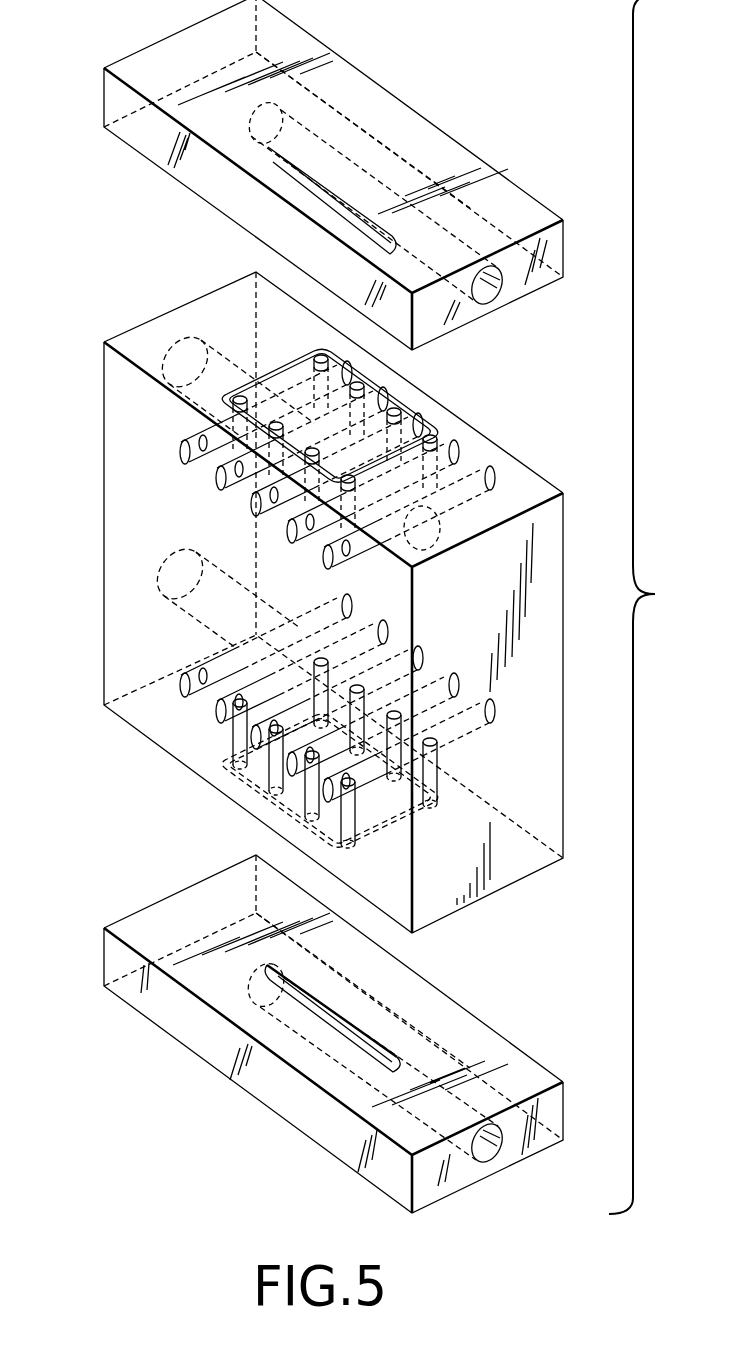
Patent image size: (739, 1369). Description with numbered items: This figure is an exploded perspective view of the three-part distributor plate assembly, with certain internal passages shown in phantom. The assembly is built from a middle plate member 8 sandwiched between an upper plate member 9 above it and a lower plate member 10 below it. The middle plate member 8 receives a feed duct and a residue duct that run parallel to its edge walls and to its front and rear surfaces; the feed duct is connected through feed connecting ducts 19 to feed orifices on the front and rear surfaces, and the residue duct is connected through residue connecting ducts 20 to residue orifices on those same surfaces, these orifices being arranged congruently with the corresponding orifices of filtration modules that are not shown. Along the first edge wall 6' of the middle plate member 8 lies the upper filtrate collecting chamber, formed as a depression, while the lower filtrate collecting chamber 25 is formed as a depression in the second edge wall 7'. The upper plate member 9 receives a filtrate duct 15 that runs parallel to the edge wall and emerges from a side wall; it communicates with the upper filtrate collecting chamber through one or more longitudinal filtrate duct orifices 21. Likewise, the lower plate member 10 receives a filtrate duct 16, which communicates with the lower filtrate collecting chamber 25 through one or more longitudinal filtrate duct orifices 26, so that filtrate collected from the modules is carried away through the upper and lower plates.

The upper plate member 9 is at (367, 76).
The longitudinal filtrate duct orifices 21 is at (292, 190).
The filtrate duct 15 is at (489, 298).
The middle plate member 8 is at (101, 500).
The first edge wall of the middle plate member 6' is at (195, 358).
The second edge wall of the middle plate member 7' is at (204, 662).
The residue connecting ducts 20 is at (198, 438).
The feed connecting ducts 19 is at (196, 660).
The lower filtrate collecting chamber 25 is at (383, 810).
The lower plate member 10 is at (177, 1047).
The longitudinal filtrate duct orifices 26 is at (376, 1042).
The filtrate duct 16 is at (490, 1153).